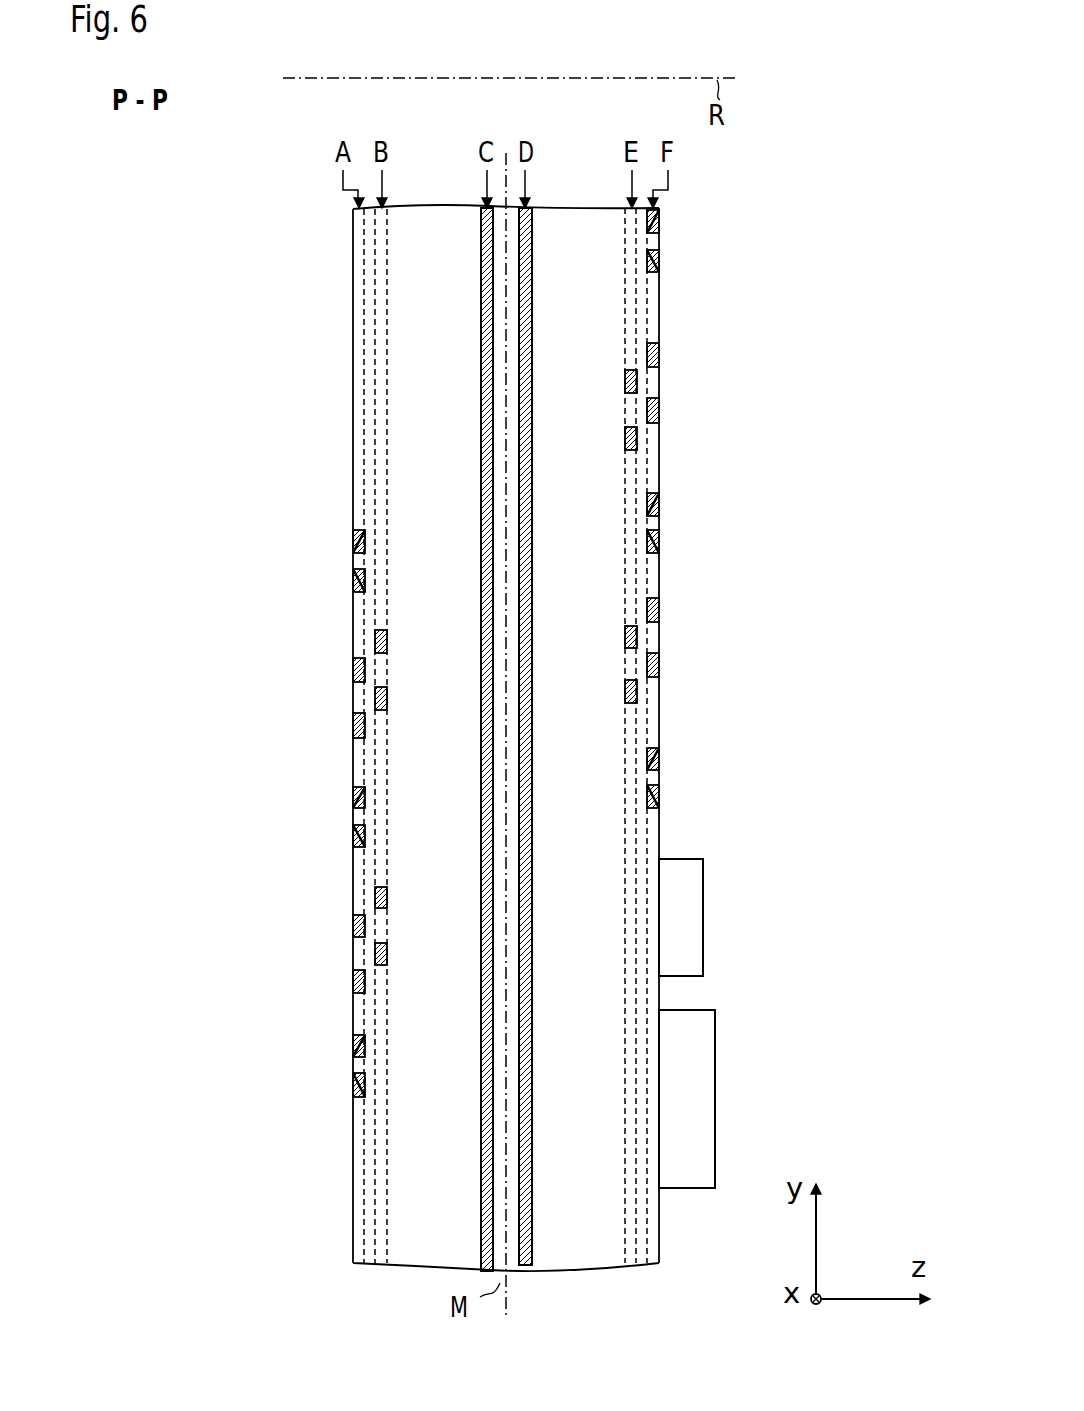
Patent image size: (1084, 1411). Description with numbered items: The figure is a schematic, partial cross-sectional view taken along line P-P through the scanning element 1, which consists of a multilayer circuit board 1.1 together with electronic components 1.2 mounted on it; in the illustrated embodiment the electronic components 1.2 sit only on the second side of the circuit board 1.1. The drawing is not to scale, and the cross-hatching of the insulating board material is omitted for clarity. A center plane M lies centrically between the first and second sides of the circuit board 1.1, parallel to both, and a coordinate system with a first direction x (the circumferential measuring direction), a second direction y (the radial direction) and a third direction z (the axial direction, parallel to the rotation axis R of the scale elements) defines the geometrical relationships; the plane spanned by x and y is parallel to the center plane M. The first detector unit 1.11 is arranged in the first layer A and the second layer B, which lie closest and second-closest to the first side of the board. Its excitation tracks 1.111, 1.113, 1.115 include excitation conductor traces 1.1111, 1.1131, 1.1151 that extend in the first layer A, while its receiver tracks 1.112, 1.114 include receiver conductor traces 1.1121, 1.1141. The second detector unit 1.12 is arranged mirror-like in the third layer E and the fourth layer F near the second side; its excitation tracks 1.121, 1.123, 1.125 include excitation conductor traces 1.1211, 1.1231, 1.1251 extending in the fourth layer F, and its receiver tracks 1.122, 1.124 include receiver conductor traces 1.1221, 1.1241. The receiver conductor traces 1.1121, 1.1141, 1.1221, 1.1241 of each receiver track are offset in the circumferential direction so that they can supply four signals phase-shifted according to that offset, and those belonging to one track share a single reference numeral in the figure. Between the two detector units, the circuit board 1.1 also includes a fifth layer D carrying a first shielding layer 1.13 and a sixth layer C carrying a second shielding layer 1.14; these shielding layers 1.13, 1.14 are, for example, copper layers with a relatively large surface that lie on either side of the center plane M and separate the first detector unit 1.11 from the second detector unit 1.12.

The scanning element 1 is at (306, 423).
The circuit board 1.1 is at (425, 218).
The first detector unit 1.11 is at (270, 530).
The excitation track 1.111 is at (350, 530).
The excitation conductor trace 1.1111 is at (365, 543).
The first receiver track 1.112 is at (350, 630).
The receiver conductor traces 1.1121 is at (408, 694).
The excitation track 1.113 is at (350, 787).
The excitation conductor trace 1.1131 is at (365, 797).
The receiver track 1.114 is at (350, 887).
The receiver conductor traces 1.1141 is at (408, 949).
The excitation track 1.115 is at (350, 1035).
The excitation conductor trace 1.1151 is at (365, 1047).
The second detector unit 1.12 is at (750, 215).
The excitation track 1.121 is at (663, 748).
The excitation conductor trace 1.1211 is at (647, 763).
The receiver track 1.122 is at (663, 598).
The receiver conductor traces 1.1221 is at (625, 637).
The excitation track 1.123 is at (663, 493).
The excitation conductor trace 1.1231 is at (647, 504).
The receiver track 1.124 is at (663, 343).
The receiver conductor traces 1.1241 is at (625, 380).
The excitation track 1.125 is at (663, 210).
The excitation conductor trace 1.1251 is at (647, 261).
The first shielding layer 1.13 is at (532, 1212).
The second shielding layer 1.14 is at (482, 1212).
The electronic components 1.2 is at (687, 1023).